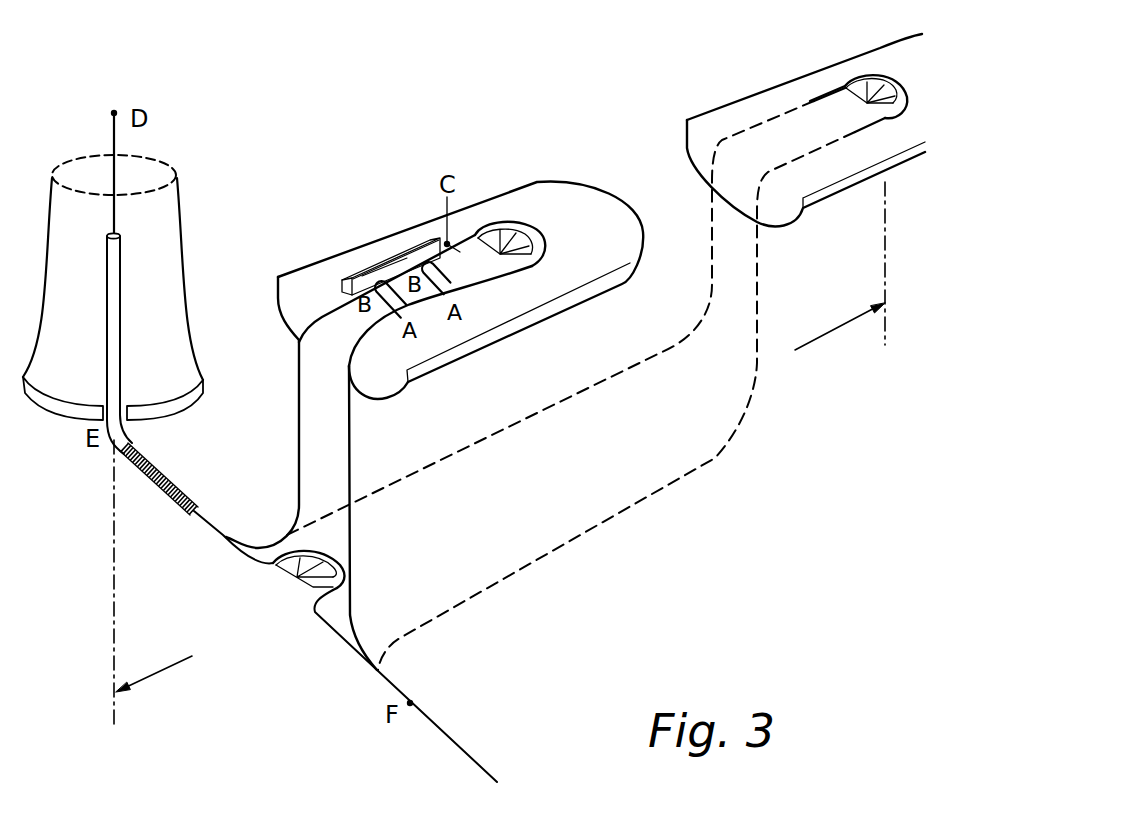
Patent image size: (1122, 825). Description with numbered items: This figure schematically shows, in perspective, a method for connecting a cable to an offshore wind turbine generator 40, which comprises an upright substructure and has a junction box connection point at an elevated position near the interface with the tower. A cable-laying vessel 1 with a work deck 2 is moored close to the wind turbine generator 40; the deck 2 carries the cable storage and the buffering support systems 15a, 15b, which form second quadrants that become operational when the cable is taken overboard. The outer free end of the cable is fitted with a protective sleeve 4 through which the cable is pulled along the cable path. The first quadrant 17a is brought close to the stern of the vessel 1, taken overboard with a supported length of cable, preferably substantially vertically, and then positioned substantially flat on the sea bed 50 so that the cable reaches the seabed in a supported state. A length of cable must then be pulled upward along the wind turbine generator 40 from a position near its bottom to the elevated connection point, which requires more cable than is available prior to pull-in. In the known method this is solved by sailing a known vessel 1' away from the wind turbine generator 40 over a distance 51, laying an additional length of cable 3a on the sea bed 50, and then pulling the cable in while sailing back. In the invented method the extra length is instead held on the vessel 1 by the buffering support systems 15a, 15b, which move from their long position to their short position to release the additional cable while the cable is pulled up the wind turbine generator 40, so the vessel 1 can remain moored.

The cable-laying vessel 1 is at (460, 290).
The known vessel 1' is at (806, 121).
The work deck 2 is at (582, 247).
The additional length of cable 3a is at (507, 427).
The protective sleeve 4 is at (168, 482).
The buffering support system 15a is at (372, 283).
The buffering support system 15b is at (418, 265).
The first quadrant 17a is at (515, 250).
The offshore wind turbine generator 40 is at (192, 163).
The sea bed 50 is at (300, 705).
The distance 51 is at (823, 338).